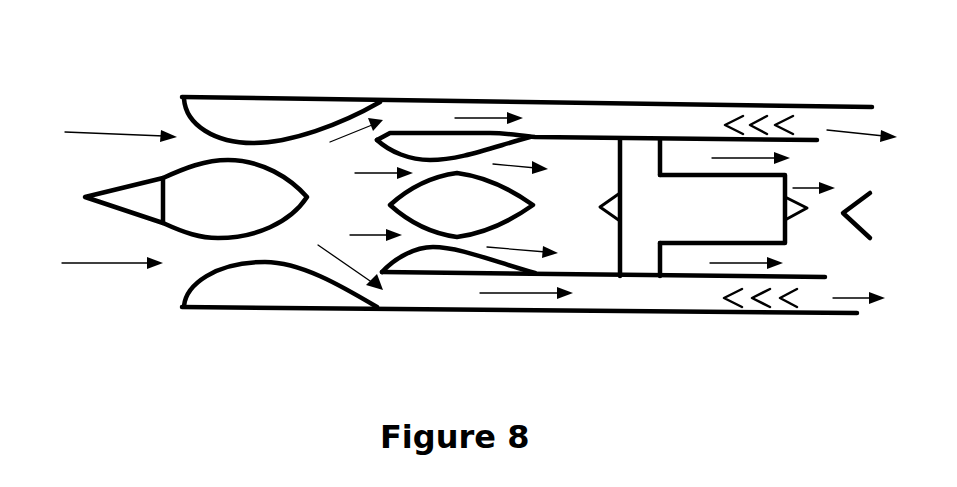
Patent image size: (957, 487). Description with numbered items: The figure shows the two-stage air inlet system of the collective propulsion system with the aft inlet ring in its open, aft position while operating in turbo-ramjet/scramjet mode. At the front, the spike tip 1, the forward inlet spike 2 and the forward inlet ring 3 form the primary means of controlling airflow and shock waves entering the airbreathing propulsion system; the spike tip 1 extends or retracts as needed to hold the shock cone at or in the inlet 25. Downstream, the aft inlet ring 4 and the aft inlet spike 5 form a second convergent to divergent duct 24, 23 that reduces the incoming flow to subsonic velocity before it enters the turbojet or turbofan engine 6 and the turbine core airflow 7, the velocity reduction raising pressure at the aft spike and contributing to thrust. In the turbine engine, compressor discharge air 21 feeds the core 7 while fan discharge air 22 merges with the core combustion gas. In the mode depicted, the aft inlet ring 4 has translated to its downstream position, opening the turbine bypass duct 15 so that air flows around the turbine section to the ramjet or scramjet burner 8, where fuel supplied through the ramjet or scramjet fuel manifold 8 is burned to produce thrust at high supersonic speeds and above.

The spike tip 1 is at (143, 197).
The forward inlet spike 2 is at (233, 185).
The forward inlet ring 3 is at (255, 120).
The aft inlet ring 4 is at (430, 145).
The aft inlet spike 5 is at (474, 209).
The turbojet or turbofan engine 6 is at (642, 183).
The turbine core 7 is at (698, 208).
The ramjet or scramjet burner 8 is at (770, 125).
The turbine bypass duct 15 is at (539, 205).
The compressor discharge air 21 is at (823, 215).
The fan discharge air 22 is at (677, 260).
The divergent duct 23 is at (562, 205).
The convergent duct 24 is at (317, 182).
The inlet 25 is at (230, 253).